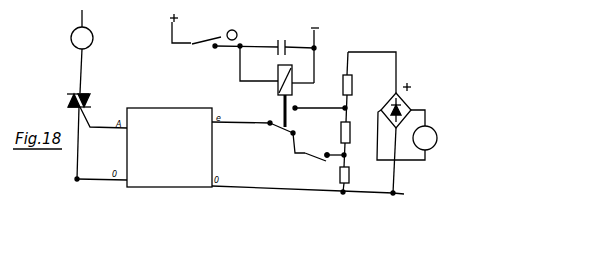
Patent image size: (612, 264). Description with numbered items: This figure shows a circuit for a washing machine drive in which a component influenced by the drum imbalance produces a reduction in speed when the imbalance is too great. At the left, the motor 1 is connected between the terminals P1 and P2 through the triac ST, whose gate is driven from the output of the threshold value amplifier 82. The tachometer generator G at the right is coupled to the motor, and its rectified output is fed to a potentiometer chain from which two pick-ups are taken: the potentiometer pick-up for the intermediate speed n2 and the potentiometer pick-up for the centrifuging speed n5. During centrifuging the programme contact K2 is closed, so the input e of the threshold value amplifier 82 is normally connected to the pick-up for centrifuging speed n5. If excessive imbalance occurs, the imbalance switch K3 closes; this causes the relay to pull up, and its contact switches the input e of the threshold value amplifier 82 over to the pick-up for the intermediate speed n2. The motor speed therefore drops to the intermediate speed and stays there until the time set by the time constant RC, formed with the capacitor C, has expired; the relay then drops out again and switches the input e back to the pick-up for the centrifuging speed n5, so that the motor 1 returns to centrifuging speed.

The motor 1 is at (93, 36).
The threshold value amplifier 82 is at (167, 187).
The triac ST is at (88, 95).
The imbalance switch K3 is at (224, 37).
The programme contact K2 is at (318, 152).
The capacitor of time constant RC C is at (295, 43).
The potentiometer pick-up for the intermediate speed n2 is at (307, 100).
The potentiometer pick-up for the centrifuging speed n5 is at (320, 151).
The tachometer generator G is at (407, 135).
The terminal P1 is at (75, 15).
The terminal P2 is at (94, 183).